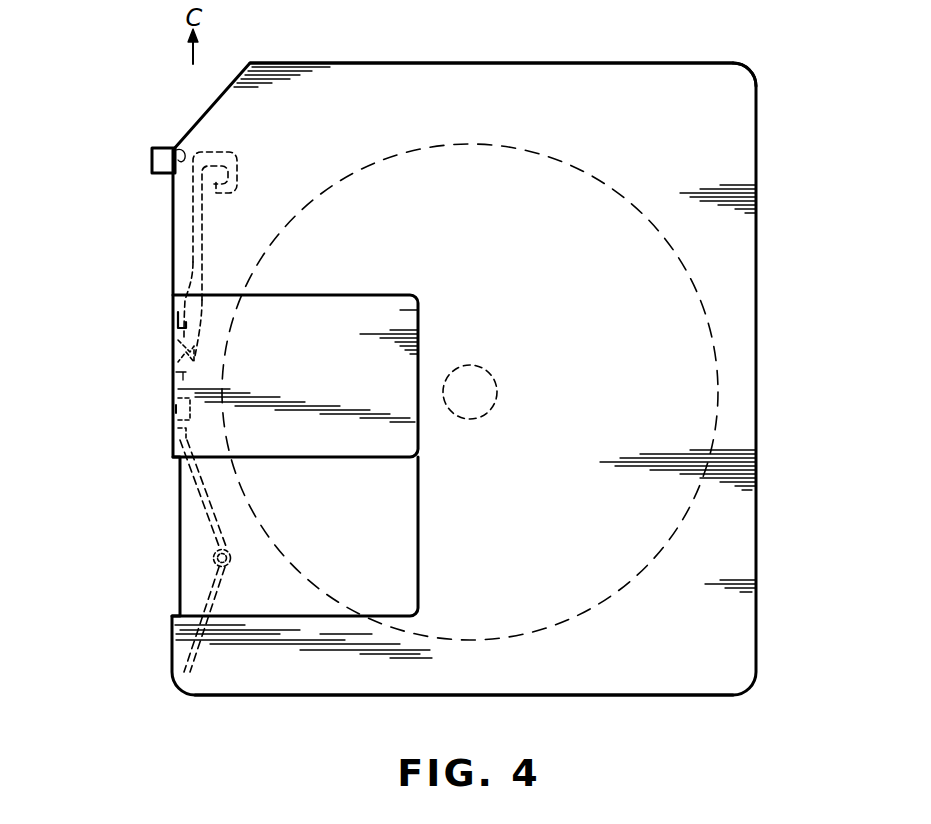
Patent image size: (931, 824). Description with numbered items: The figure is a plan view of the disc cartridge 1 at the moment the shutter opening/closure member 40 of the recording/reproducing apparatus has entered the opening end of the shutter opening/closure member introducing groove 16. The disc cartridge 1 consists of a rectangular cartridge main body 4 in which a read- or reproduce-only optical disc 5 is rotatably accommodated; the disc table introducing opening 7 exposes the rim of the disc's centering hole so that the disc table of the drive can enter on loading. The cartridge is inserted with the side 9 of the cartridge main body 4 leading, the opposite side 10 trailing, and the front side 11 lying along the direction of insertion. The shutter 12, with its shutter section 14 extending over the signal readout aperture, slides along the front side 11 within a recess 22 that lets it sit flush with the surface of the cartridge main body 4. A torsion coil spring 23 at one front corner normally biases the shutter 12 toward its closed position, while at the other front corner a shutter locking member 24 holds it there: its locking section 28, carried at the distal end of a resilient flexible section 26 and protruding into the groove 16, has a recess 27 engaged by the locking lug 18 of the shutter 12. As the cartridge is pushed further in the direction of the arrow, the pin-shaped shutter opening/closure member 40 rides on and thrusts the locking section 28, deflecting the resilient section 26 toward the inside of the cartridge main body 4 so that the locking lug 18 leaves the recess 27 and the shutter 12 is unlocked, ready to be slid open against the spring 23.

The disc cartridge 1 is at (757, 138).
The cartridge main body 4 is at (734, 80).
The optical disc 5 is at (700, 360).
The disc table introducing opening 7 is at (176, 426).
The side of cartridge main body 9 is at (398, 63).
The side of cartridge main body 10 is at (418, 697).
The front side of cartridge main body 11 is at (173, 660).
The shutter 12 is at (175, 399).
The shutter section 14 is at (419, 310).
The shutter opening/closure member introducing groove 16 is at (178, 144).
The locking lug 18 is at (176, 340).
The recess 22 is at (410, 546).
The torsion coil spring 23 is at (213, 558).
The shutter locking member 24 is at (192, 212).
The resilient flexible section 26 is at (186, 278).
The recess 27 is at (188, 324).
The locking section 28 is at (172, 374).
The shutter opening/closure member 40 is at (178, 148).